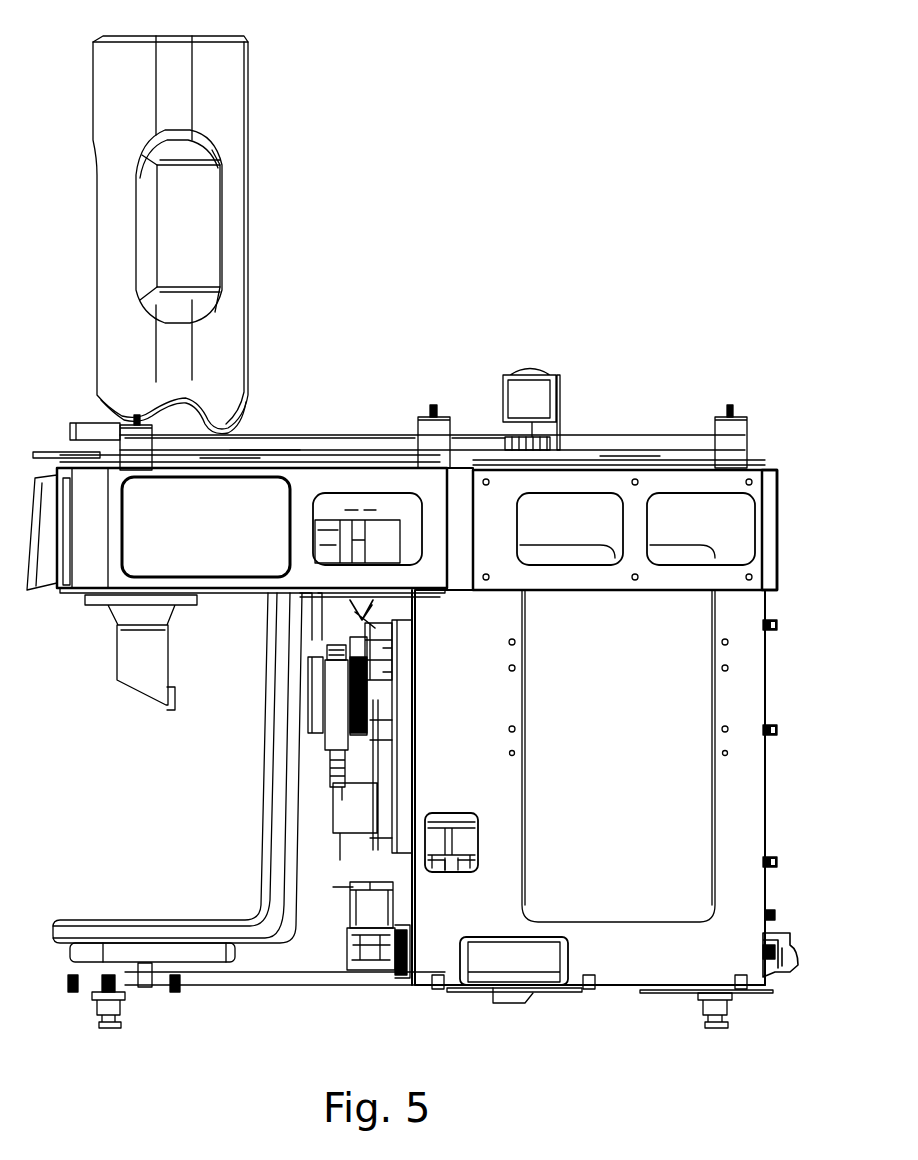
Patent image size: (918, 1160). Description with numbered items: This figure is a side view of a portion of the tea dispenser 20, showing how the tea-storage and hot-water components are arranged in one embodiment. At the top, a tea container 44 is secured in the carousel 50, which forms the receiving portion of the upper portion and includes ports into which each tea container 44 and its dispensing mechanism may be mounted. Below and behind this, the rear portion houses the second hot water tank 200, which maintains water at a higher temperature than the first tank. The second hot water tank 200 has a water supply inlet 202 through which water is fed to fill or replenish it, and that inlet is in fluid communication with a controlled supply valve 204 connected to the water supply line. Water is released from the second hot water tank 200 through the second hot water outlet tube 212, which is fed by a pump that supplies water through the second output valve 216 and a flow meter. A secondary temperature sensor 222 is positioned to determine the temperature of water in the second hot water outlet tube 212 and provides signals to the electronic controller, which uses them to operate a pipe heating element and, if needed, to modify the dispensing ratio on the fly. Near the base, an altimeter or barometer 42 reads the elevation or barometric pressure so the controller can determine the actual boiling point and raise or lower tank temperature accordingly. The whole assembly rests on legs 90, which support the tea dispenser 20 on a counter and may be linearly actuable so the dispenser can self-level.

The tea dispenser 20 is at (651, 64).
The tea container 44 is at (110, 86).
The carousel 50 is at (300, 440).
The secondary temperature sensor 222 is at (372, 607).
The second hot water tank 200 is at (678, 700).
The leg 90 is at (102, 1005).
The second hot water outlet tube 212 is at (320, 860).
The controlled supply valve 204 is at (355, 965).
The second output valve 216 is at (380, 945).
The water supply inlet 202 is at (403, 962).
The altimeter or barometer 42 is at (530, 960).